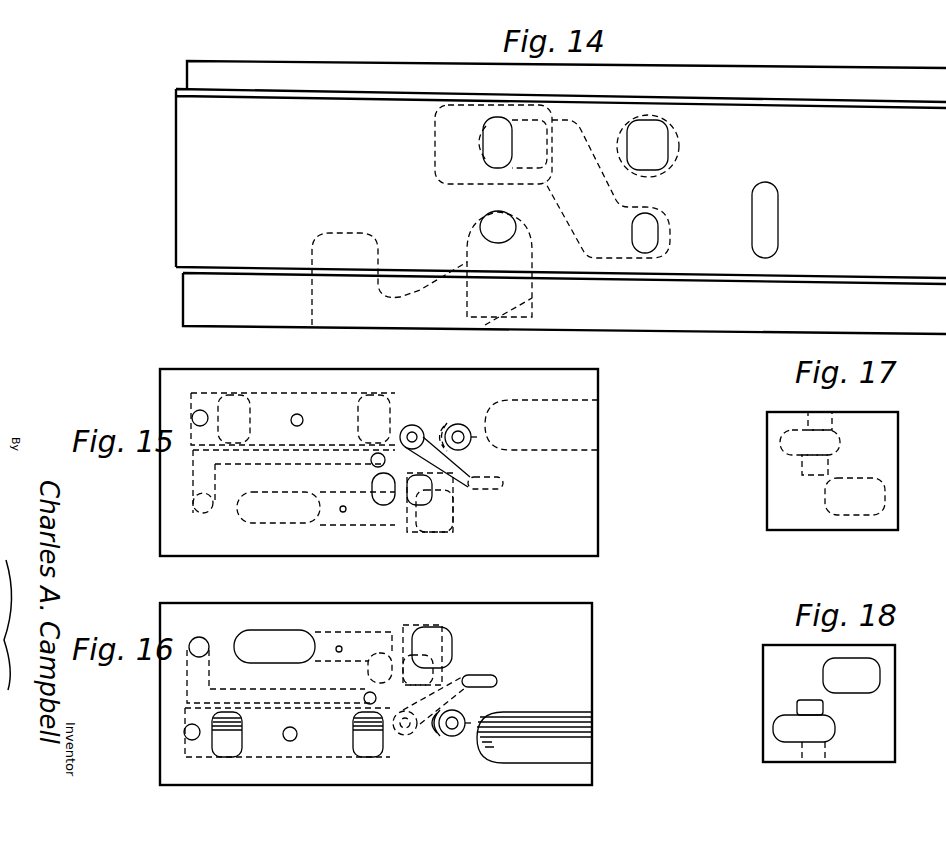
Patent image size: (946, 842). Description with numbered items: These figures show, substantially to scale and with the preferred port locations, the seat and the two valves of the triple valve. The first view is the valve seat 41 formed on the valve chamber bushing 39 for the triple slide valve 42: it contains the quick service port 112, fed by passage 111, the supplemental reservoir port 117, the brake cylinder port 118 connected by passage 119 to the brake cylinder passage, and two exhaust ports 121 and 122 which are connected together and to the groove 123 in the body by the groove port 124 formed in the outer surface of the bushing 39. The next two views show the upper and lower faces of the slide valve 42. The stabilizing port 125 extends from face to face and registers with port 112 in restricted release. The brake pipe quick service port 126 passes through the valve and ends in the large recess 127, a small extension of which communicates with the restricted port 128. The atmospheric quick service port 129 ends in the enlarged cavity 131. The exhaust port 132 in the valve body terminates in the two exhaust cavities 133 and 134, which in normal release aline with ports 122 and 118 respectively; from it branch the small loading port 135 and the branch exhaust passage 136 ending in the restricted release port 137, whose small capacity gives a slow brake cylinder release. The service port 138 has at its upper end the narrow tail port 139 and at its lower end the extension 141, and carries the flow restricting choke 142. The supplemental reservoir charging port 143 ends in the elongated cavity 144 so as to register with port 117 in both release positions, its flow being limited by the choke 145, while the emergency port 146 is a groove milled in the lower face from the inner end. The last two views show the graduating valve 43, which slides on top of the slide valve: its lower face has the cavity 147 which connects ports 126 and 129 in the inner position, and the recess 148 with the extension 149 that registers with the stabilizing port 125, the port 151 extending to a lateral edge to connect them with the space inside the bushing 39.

In FIG. 14, the valve chamber bushing 39 is at (183, 298).
In FIG. 14, the valve seat 41 is at (176, 247).
In FIG. 15, the triple slide valve 42 is at (584, 498).
In FIG. 16, the triple slide valve 42 is at (570, 628).
In FIG. 17, the graduating valve 43 is at (888, 457).
In FIG. 18, the graduating valve 43 is at (875, 722).
In FIG. 14, the passage 111 is at (534, 311).
In FIG. 14, the quick service port 112 is at (482, 222).
In FIG. 14, the supplemental reservoir port 117 is at (774, 220).
In FIG. 14, the brake cylinder port 118 is at (668, 152).
In FIG. 14, the passage 119 is at (680, 127).
In FIG. 14, the exhaust port 121 is at (658, 229).
In FIG. 14, the exhaust port 122 is at (484, 130).
In FIG. 14, the groove 123 is at (433, 148).
In FIG. 14, the groove port 124 is at (588, 142).
In FIG. 15, the stabilizing port 125 is at (203, 513).
In FIG. 16, the stabilizing port 125 is at (197, 637).
In FIG. 15, the brake pipe quick service port 126 is at (372, 482).
In FIG. 16, the brake pipe quick service port 126 is at (368, 672).
In FIG. 15, the recess 127 is at (262, 525).
In FIG. 16, the recess 127 is at (258, 630).
In FIG. 15, the restricted port 128 is at (344, 512).
In FIG. 16, the restricted port 128 is at (341, 646).
In FIG. 15, the atmospheric quick service port 129 is at (425, 487).
In FIG. 16, the atmospheric quick service port 129 is at (440, 660).
In FIG. 15, the cavity 131 is at (453, 531).
In FIG. 16, the cavity 131 is at (440, 630).
In FIG. 15, the exhaust port 132 is at (284, 393).
In FIG. 16, the exhaust port 132 is at (328, 758).
In FIG. 15, the exhaust cavity 133 is at (252, 404).
In FIG. 16, the exhaust cavity 133 is at (228, 750).
In FIG. 15, the exhaust cavity 134 is at (393, 412).
In FIG. 16, the exhaust cavity 134 is at (369, 750).
In FIG. 15, the loading port 135 is at (303, 418).
In FIG. 16, the loading port 135 is at (300, 729).
In FIG. 15, the branch exhaust passage 136 is at (198, 393).
In FIG. 16, the branch exhaust passage 136 is at (200, 758).
In FIG. 15, the restricted release port 137 is at (192, 414).
In FIG. 16, the restricted release port 137 is at (184, 733).
In FIG. 15, the service port 138 is at (464, 430).
In FIG. 16, the service port 138 is at (452, 736).
In FIG. 15, the tail port 139 is at (478, 437).
In FIG. 16, the tail port 139 is at (470, 718).
In FIG. 16, the extension 141 is at (440, 736).
In FIG. 15, the flow restricting choke 142 is at (463, 449).
In FIG. 16, the flow restricting choke 142 is at (460, 735).
In FIG. 15, the supplemental reservoir charging port 143 is at (411, 425).
In FIG. 16, the supplemental reservoir charging port 143 is at (404, 711).
In FIG. 15, the elongated cavity 144 is at (496, 490).
In FIG. 16, the elongated cavity 144 is at (490, 674).
In FIG. 15, the choke 145 is at (420, 426).
In FIG. 16, the choke 145 is at (422, 736).
In FIG. 15, the emergency port 146 is at (590, 450).
In FIG. 16, the emergency port 146 is at (540, 728).
In FIG. 17, the cavity 147 is at (885, 498).
In FIG. 18, the cavity 147 is at (880, 676).
In FIG. 17, the recess 148 is at (838, 438).
In FIG. 18, the recess 148 is at (835, 733).
In FIG. 17, the extension 149 is at (810, 478).
In FIG. 18, the extension 149 is at (808, 700).
In FIG. 17, the port 151 is at (806, 418).
In FIG. 18, the port 151 is at (800, 755).